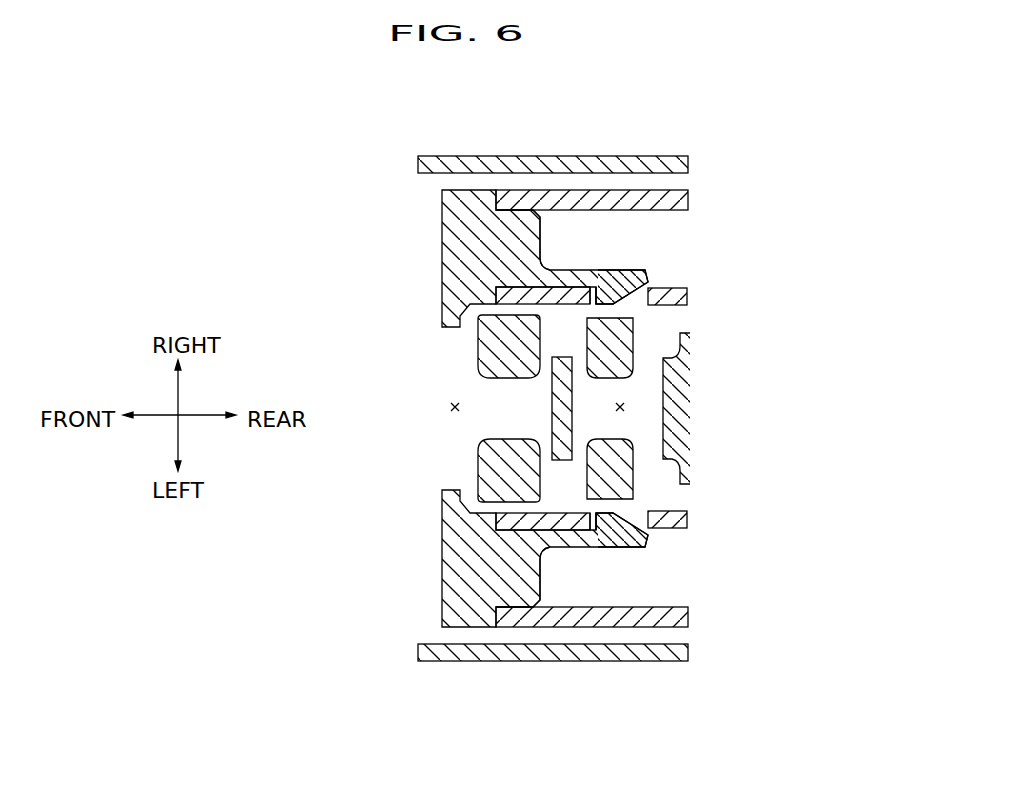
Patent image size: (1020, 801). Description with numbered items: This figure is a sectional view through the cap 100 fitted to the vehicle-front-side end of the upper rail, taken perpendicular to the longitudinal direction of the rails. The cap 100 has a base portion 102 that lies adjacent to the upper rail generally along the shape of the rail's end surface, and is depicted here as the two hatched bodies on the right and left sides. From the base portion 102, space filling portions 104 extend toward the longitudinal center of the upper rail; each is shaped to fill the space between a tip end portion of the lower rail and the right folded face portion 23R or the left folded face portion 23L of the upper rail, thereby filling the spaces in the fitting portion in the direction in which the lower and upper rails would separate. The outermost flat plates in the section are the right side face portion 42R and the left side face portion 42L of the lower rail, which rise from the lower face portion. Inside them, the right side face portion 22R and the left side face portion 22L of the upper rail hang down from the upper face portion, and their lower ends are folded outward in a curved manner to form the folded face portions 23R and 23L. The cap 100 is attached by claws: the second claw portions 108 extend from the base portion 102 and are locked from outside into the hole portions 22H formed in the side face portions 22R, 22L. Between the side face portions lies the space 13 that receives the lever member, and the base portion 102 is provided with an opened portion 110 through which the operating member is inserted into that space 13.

The cap 100 is at (405, 192).
The base portion 102 is at (468, 262).
The space filling portion 104 is at (517, 233).
The second claw portion 108 is at (623, 270).
The opened portion 110 is at (452, 409).
The space 13 is at (624, 407).
The right side face portion 22R is at (672, 291).
The left side face portion 22L is at (680, 518).
The hole portion 22H is at (603, 293).
The right folded face portion 23R is at (652, 199).
The left folded face portion 23L is at (655, 619).
The right side face portion 42R is at (605, 166).
The left side face portion 42L is at (607, 651).